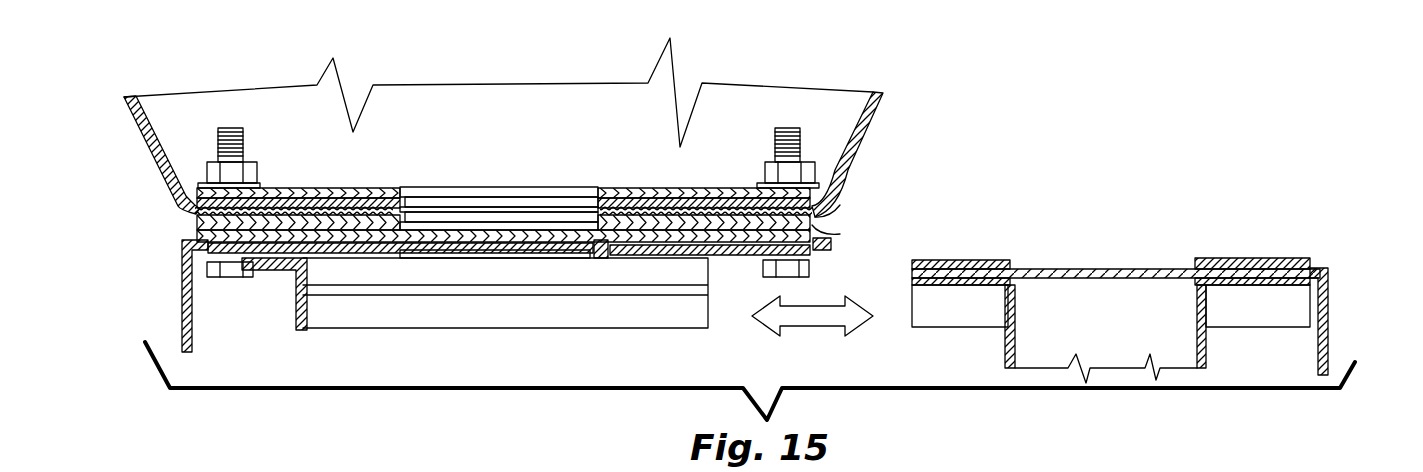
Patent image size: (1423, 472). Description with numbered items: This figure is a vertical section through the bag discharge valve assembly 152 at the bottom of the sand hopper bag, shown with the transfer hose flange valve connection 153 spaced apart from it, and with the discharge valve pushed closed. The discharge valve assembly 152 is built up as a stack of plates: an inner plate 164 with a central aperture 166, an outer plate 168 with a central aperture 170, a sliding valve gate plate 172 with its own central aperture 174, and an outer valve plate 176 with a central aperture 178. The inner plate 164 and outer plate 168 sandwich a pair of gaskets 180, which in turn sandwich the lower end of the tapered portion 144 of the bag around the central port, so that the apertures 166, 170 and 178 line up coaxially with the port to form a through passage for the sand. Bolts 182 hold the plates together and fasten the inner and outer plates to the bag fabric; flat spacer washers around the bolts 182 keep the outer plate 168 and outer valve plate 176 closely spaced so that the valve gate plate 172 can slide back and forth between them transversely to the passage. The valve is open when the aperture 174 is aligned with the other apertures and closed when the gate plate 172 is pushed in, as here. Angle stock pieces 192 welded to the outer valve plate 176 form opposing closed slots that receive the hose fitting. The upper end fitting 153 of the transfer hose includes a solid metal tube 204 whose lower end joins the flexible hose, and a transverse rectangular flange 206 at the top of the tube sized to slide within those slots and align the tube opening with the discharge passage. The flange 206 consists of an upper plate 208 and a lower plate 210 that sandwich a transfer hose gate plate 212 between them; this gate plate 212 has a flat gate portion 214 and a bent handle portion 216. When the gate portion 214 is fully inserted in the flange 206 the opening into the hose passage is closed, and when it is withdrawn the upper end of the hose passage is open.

The tapered portion 144 is at (876, 115).
The bag discharge valve assembly 152 is at (933, 196).
The transfer hose flange valve connection 153 is at (1318, 262).
The inner plate 164 is at (612, 188).
The central aperture 166 is at (497, 187).
The outer plate 168 is at (815, 235).
The central aperture 170 is at (450, 232).
The sliding valve gate plate 172 is at (193, 313).
The central aperture 174 is at (740, 255).
The outer valve plate 176 is at (828, 248).
The central aperture 178 is at (463, 252).
The gaskets 180 is at (815, 220).
The bolts 182 is at (247, 146).
The angle stock pieces 192 is at (1078, 471).
The solid metal tube 204 is at (1203, 335).
The transverse rectangular flange 206 is at (1230, 258).
The upper plate 208 is at (1205, 262).
The lower plate 210 is at (1245, 283).
The transfer hose gate plate 212 is at (1328, 285).
The flat gate portion 214 is at (1048, 270).
The bent handle portion 216 is at (1328, 332).